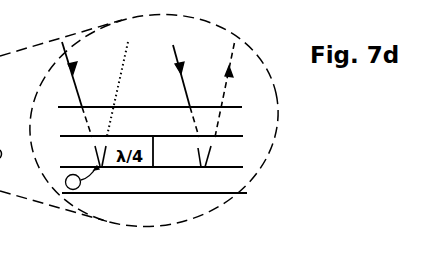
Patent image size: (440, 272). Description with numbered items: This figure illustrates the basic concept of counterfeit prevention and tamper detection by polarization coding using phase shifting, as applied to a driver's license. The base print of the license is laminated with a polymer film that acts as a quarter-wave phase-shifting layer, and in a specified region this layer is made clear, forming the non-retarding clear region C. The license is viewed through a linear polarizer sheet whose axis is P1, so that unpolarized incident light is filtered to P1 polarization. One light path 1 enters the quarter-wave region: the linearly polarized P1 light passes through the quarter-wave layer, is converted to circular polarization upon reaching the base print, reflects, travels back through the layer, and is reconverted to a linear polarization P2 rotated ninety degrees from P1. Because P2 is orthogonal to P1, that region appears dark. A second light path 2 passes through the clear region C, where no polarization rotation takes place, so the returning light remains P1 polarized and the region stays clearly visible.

The first incident light beam 1 is at (84, 104).
The second incident light beam 2 is at (192, 106).
The polarizer axis P1 is at (91, 143).
The rotated linear polarization P2 is at (107, 136).
The clear region C is at (167, 151).